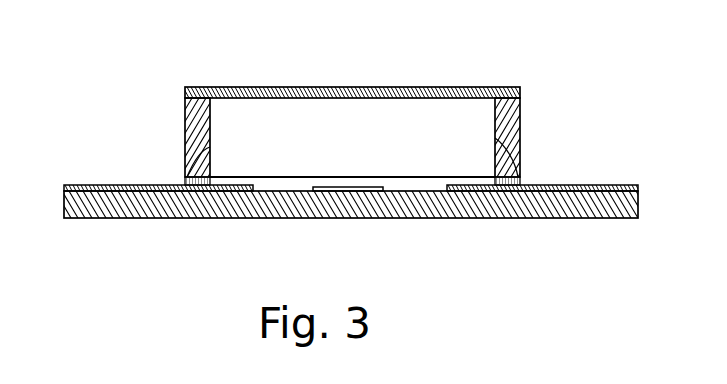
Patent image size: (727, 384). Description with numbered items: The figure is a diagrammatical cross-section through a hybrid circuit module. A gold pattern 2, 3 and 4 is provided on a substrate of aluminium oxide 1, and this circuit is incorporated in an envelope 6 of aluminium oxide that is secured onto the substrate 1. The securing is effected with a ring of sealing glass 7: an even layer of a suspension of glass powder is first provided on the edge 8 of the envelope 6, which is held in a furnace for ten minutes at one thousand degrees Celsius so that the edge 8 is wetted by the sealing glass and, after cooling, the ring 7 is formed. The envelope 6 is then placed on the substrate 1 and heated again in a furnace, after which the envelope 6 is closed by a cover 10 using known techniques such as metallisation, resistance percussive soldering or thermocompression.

The substrate of aluminium oxide 1 is at (207, 201).
The gold pattern 2 is at (97, 185).
The gold pattern 3 is at (608, 187).
The gold pattern 4 is at (343, 193).
The envelope 6 is at (510, 110).
The ring of sealing glass 7 is at (185, 181).
The edge of the envelope 8 is at (210, 147).
The cover 10 is at (281, 86).